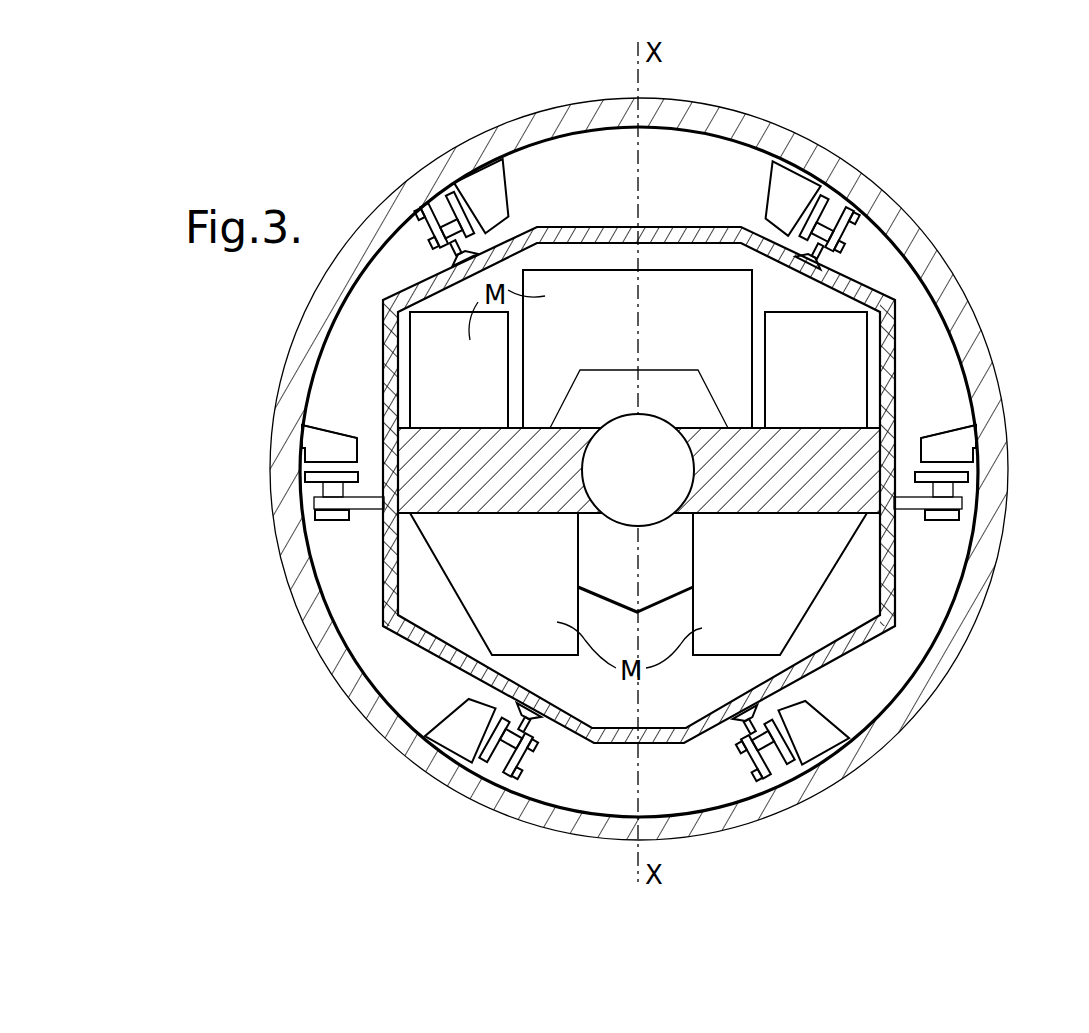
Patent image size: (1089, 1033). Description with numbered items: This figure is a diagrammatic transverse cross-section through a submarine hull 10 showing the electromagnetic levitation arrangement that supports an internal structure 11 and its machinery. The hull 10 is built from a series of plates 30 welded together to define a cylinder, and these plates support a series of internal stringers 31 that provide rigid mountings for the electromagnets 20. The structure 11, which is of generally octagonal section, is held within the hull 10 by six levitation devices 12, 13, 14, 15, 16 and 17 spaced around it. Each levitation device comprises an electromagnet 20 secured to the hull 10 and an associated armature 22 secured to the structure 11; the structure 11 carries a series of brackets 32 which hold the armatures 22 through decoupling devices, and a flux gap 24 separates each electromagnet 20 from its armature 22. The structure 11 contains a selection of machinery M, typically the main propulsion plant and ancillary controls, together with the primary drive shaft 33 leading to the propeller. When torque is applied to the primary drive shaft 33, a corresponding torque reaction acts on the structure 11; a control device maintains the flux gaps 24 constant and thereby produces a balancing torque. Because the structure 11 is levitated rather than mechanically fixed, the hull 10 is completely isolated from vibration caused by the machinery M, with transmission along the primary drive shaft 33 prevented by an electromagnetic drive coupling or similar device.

The submarine hull 10 is at (730, 99).
The structure 11 is at (683, 222).
The levitation device 12 is at (455, 184).
The levitation device 13 is at (296, 472).
The levitation device 14 is at (460, 778).
The levitation device 15 is at (833, 177).
The levitation device 16 is at (978, 473).
The levitation device 17 is at (795, 740).
The electromagnet 20 is at (803, 185).
The armature 22 is at (858, 200).
The flux gap 24 is at (800, 762).
The plate 30 is at (402, 212).
The internal stringer 31 is at (325, 433).
The bracket 32 is at (843, 215).
The primary drive shaft 33 is at (651, 482).